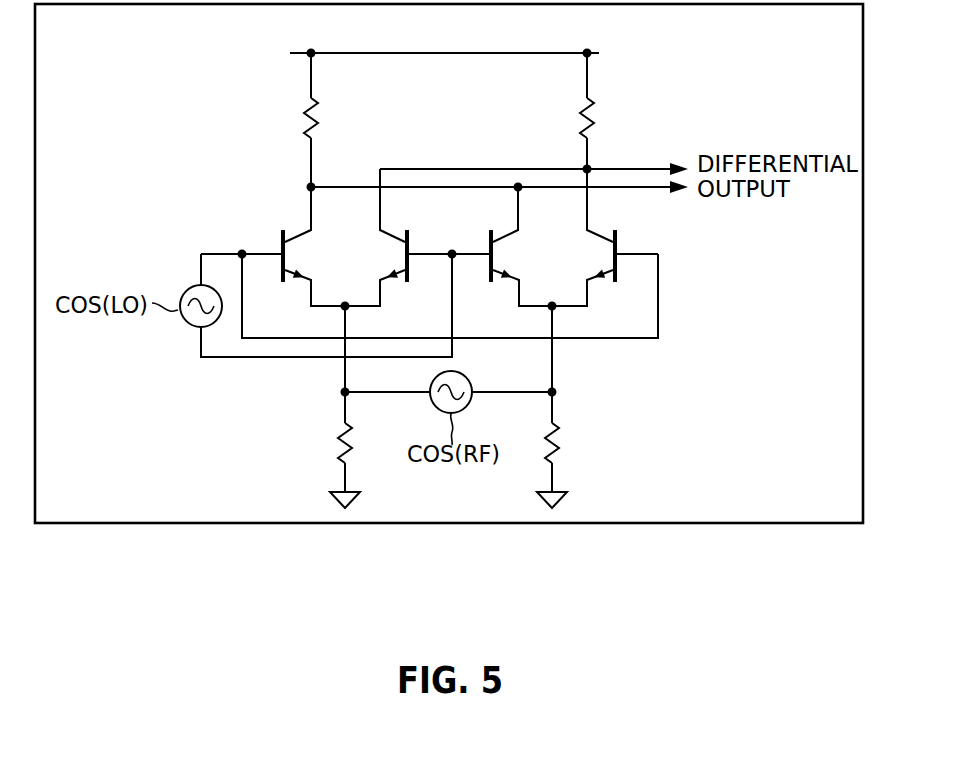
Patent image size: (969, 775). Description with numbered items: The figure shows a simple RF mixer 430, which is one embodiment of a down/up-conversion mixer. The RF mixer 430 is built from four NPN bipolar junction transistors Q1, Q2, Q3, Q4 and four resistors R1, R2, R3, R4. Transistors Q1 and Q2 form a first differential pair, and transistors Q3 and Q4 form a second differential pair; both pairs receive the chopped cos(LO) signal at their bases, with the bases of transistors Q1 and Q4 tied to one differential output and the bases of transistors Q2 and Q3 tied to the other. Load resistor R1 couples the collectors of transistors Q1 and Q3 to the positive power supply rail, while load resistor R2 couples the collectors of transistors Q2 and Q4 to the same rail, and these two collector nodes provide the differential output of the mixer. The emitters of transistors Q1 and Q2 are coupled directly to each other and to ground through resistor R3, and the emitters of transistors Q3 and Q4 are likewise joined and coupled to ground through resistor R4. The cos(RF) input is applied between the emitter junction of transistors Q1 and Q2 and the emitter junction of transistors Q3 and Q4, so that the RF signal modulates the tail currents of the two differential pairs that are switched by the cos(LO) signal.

The RF mixer 430 is at (215, 523).
The transistor Q1 is at (283, 232).
The transistor Q2 is at (407, 232).
The transistor Q3 is at (491, 283).
The transistor Q4 is at (615, 232).
The resistor R1 is at (318, 130).
The resistor R2 is at (582, 137).
The resistor R3 is at (340, 432).
The resistor R4 is at (560, 448).